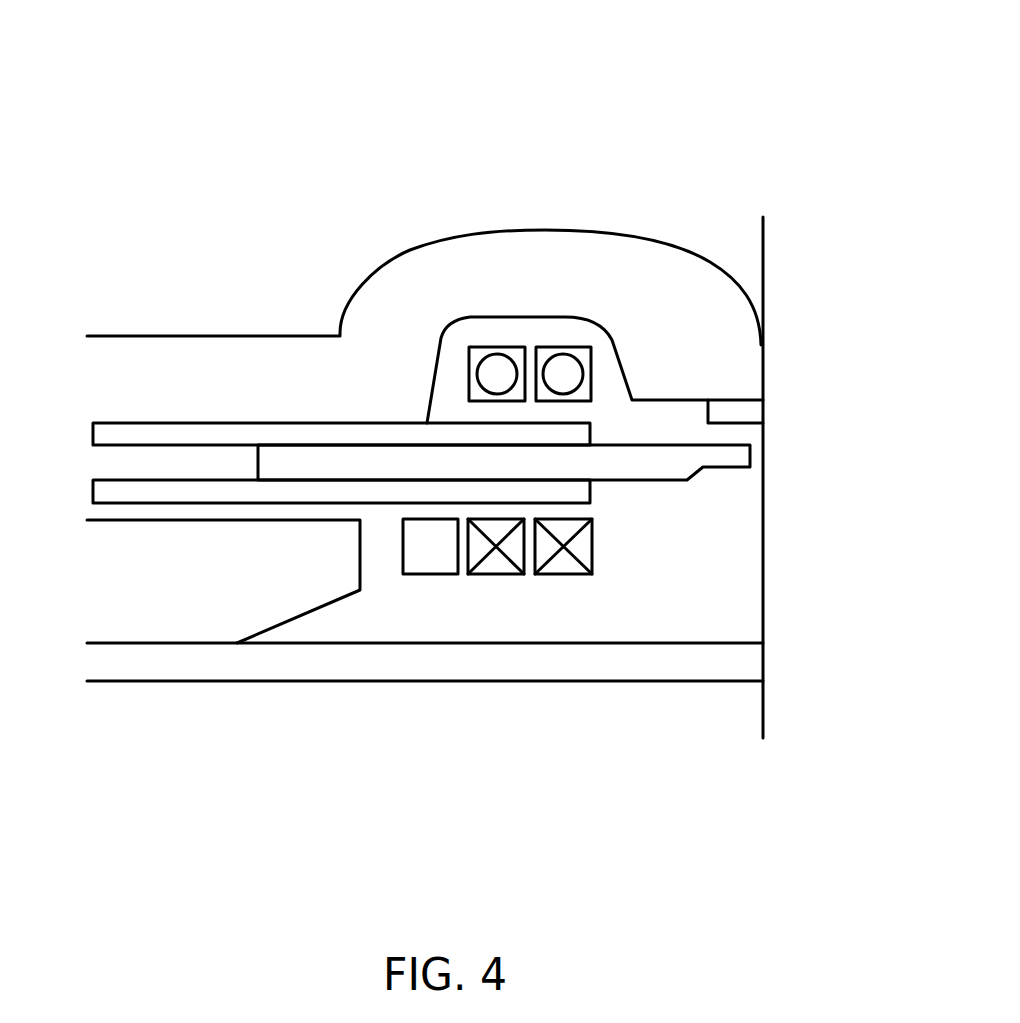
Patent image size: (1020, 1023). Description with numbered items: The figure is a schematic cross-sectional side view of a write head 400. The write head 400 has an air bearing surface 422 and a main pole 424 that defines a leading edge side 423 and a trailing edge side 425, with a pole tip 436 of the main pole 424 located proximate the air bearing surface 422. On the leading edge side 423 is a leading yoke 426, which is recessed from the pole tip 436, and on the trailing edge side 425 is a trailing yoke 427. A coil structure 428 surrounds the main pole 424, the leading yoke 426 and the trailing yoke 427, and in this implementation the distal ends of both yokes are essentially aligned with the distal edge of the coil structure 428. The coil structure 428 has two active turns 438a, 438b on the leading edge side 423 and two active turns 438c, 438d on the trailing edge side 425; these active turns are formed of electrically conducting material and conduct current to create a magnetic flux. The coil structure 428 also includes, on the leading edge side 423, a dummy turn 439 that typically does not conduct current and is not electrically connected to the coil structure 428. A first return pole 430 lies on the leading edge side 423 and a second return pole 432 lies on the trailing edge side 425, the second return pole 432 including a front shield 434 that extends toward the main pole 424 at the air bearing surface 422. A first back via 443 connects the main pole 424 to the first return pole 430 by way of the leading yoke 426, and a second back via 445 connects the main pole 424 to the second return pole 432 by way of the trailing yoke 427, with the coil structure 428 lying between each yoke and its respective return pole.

The write head 400 is at (193, 78).
The air bearing surface 422 is at (763, 503).
The leading edge side 423 is at (640, 482).
The main pole 424 is at (623, 480).
The trailing edge side 425 is at (657, 442).
The leading yoke 426 is at (395, 503).
The trailing yoke 427 is at (332, 423).
The coil structure 428 is at (480, 340).
The first return pole 430 is at (173, 676).
The second return pole 432 is at (243, 379).
The front shield 434 is at (732, 398).
The pole tip 436 is at (752, 447).
The turn 438a is at (508, 574).
The turn 438b is at (563, 574).
The turn 438c is at (493, 347).
The turn 438d is at (546, 347).
The dummy turn 439 is at (408, 574).
The first back via 443 is at (357, 552).
The second back via 445 is at (432, 378).